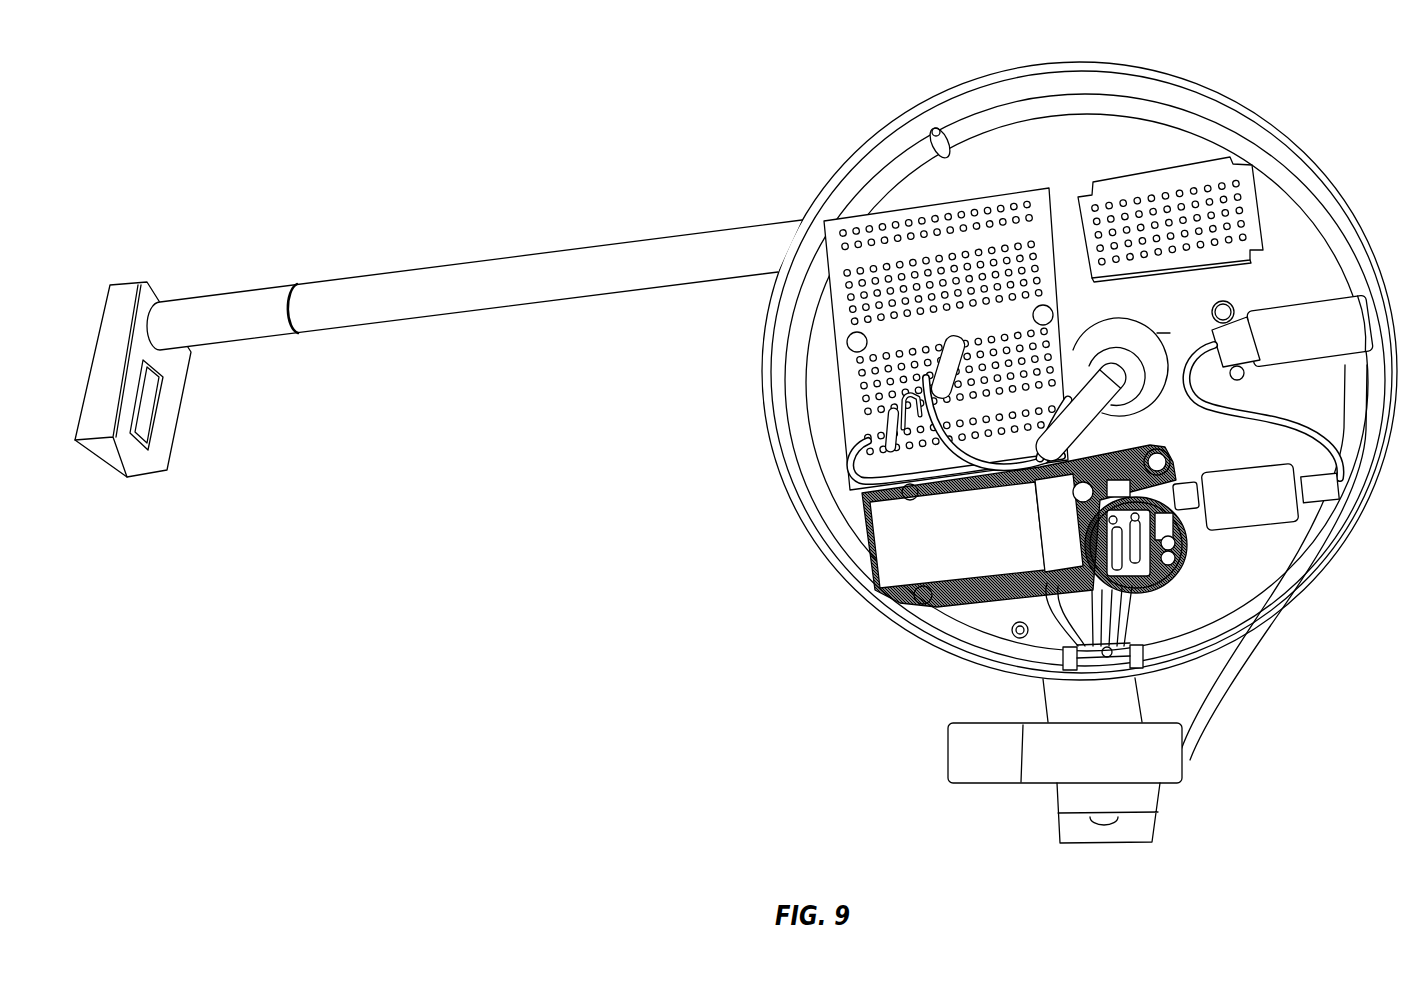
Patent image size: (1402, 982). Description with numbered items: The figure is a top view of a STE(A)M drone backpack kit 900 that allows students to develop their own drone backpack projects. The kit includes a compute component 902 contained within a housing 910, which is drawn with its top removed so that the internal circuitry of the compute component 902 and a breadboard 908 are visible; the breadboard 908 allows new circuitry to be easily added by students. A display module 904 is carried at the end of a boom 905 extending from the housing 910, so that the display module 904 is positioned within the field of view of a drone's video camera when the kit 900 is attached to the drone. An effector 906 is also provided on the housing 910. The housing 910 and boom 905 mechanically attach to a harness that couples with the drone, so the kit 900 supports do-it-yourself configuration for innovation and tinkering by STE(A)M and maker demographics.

The drone backpack kit 900 is at (211, 112).
The compute component 902 is at (918, 86).
The display module 904 is at (120, 294).
The boom 905 is at (460, 273).
The effector 906 is at (1126, 765).
The breadboard 908 is at (1078, 177).
The housing 910 is at (1250, 107).